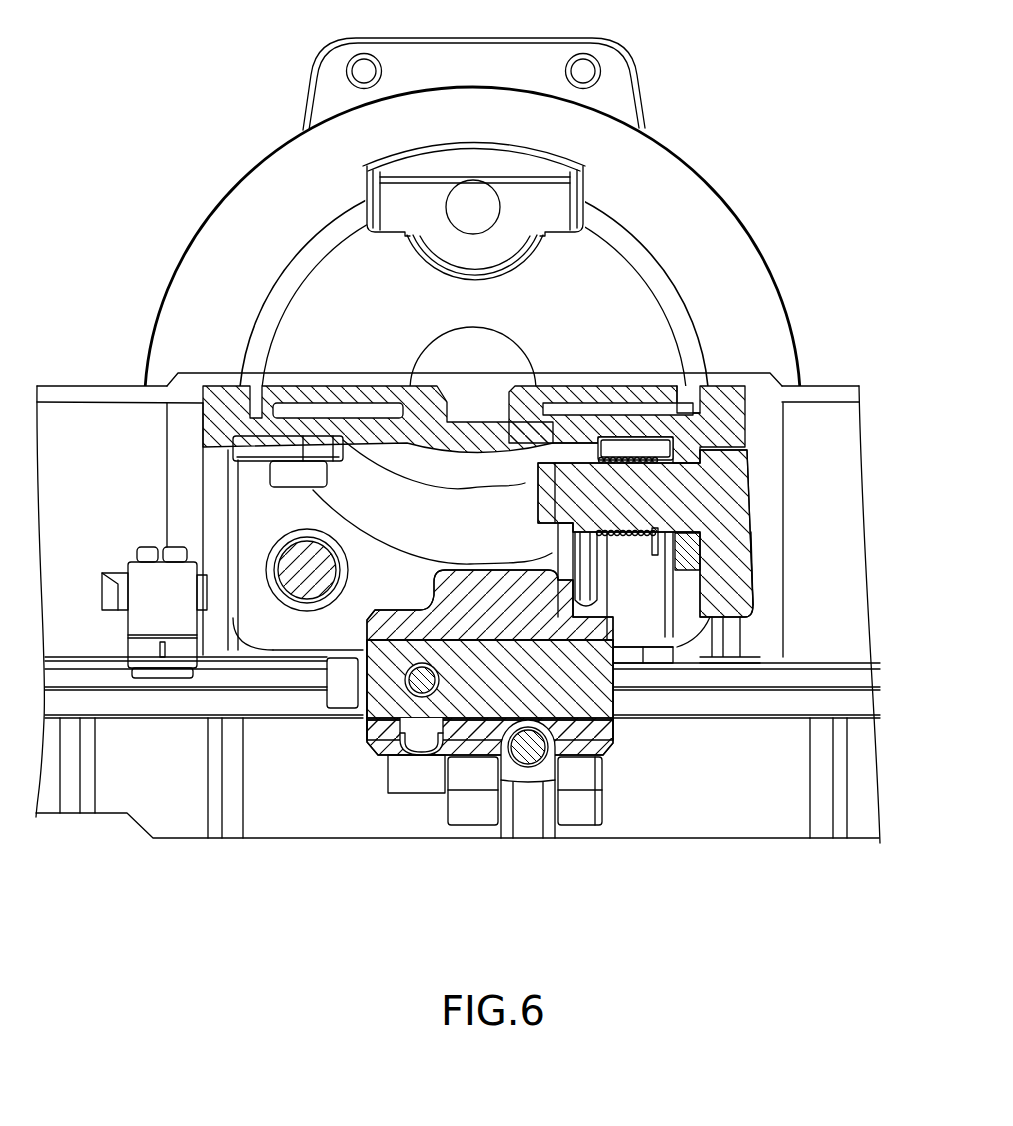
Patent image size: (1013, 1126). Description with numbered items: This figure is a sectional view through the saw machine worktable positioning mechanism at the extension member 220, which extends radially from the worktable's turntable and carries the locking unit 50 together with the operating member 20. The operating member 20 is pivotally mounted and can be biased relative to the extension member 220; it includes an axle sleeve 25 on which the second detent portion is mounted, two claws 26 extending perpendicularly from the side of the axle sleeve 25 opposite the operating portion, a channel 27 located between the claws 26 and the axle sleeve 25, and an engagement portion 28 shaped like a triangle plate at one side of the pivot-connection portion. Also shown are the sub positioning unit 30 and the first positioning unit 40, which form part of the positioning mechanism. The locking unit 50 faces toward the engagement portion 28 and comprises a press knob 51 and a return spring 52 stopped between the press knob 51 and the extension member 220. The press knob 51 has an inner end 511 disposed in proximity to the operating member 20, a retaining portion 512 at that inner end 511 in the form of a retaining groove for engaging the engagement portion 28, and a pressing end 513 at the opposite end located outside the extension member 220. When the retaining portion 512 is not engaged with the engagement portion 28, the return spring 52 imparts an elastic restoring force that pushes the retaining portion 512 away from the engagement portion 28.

The operating member 20 is at (367, 743).
The axle sleeve 25 is at (613, 740).
The claws 26 is at (580, 807).
The channel 27 is at (527, 784).
The engagement portion 28 is at (556, 547).
The sub positioning unit 30 is at (521, 757).
The first positioning unit 40 is at (421, 740).
The locking unit 50 is at (722, 465).
The press knob 51 is at (742, 488).
The inner end 511 is at (537, 468).
The retaining portion 512 is at (558, 443).
The pressing end 513 is at (737, 533).
The return spring 52 is at (618, 437).
The extension member 220 is at (659, 437).